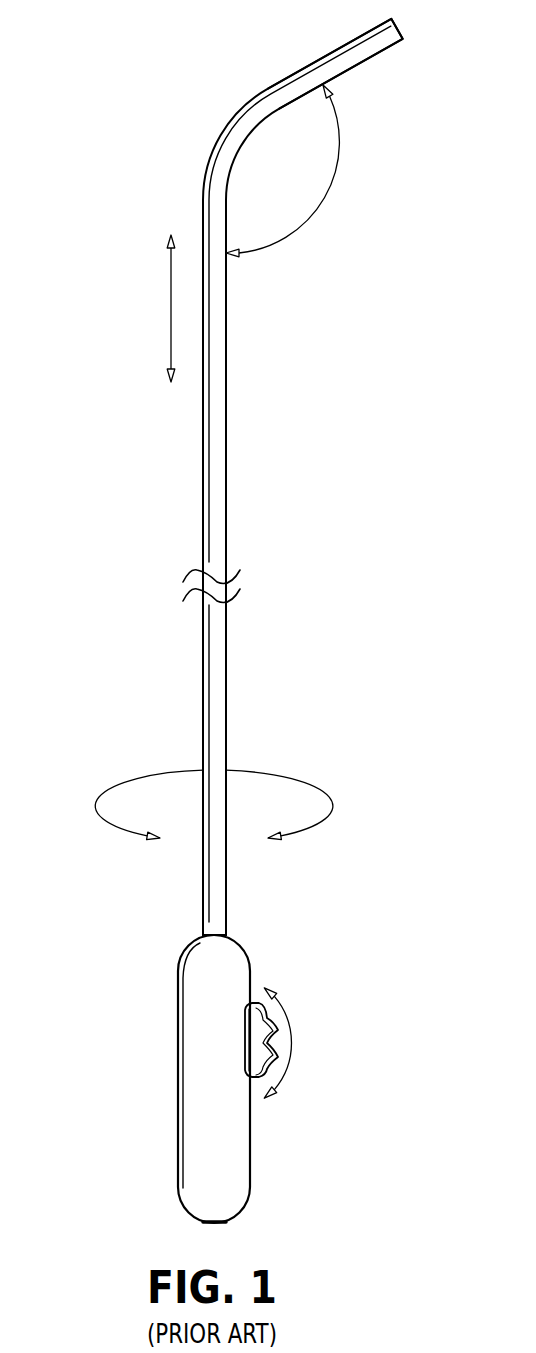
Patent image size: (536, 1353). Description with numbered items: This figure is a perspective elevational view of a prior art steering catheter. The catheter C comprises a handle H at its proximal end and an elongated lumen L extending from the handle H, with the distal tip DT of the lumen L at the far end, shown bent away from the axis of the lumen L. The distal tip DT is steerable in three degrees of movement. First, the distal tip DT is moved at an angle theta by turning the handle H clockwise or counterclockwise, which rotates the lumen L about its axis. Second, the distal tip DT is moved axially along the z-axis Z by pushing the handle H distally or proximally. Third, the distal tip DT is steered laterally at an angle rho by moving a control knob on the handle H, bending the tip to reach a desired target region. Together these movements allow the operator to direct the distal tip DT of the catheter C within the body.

The distal tip DT is at (323, 59).
The z-axis Z is at (160, 308).
The catheter C is at (140, 488).
The lumen L is at (203, 672).
The handle H is at (178, 1030).